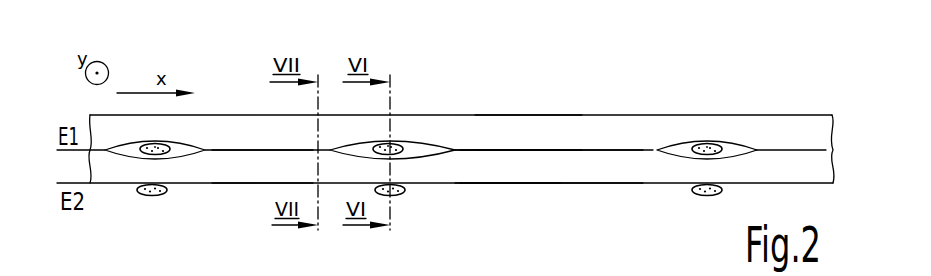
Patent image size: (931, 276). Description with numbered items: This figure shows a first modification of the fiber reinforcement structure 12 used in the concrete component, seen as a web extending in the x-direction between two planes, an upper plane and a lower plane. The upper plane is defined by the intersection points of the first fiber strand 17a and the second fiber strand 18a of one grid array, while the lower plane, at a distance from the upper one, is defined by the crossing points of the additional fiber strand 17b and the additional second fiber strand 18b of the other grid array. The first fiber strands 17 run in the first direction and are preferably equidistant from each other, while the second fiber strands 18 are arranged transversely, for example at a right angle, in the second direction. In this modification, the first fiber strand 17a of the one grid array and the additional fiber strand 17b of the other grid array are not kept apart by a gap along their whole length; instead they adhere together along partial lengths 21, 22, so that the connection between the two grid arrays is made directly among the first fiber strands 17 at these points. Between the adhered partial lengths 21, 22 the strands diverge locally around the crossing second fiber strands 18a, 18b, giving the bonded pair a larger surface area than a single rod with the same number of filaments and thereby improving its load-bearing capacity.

The fiber reinforcement structure 12 is at (608, 86).
The first fiber strands 17 is at (517, 99).
The first fiber strand 17a is at (560, 132).
The additional fiber strand 17b is at (506, 123).
The second fiber strands 18 is at (421, 207).
The second fiber strand 18a is at (415, 152).
The additional second fiber strand 18b is at (414, 208).
The partial length 21 is at (313, 153).
The partial length 22 is at (460, 155).